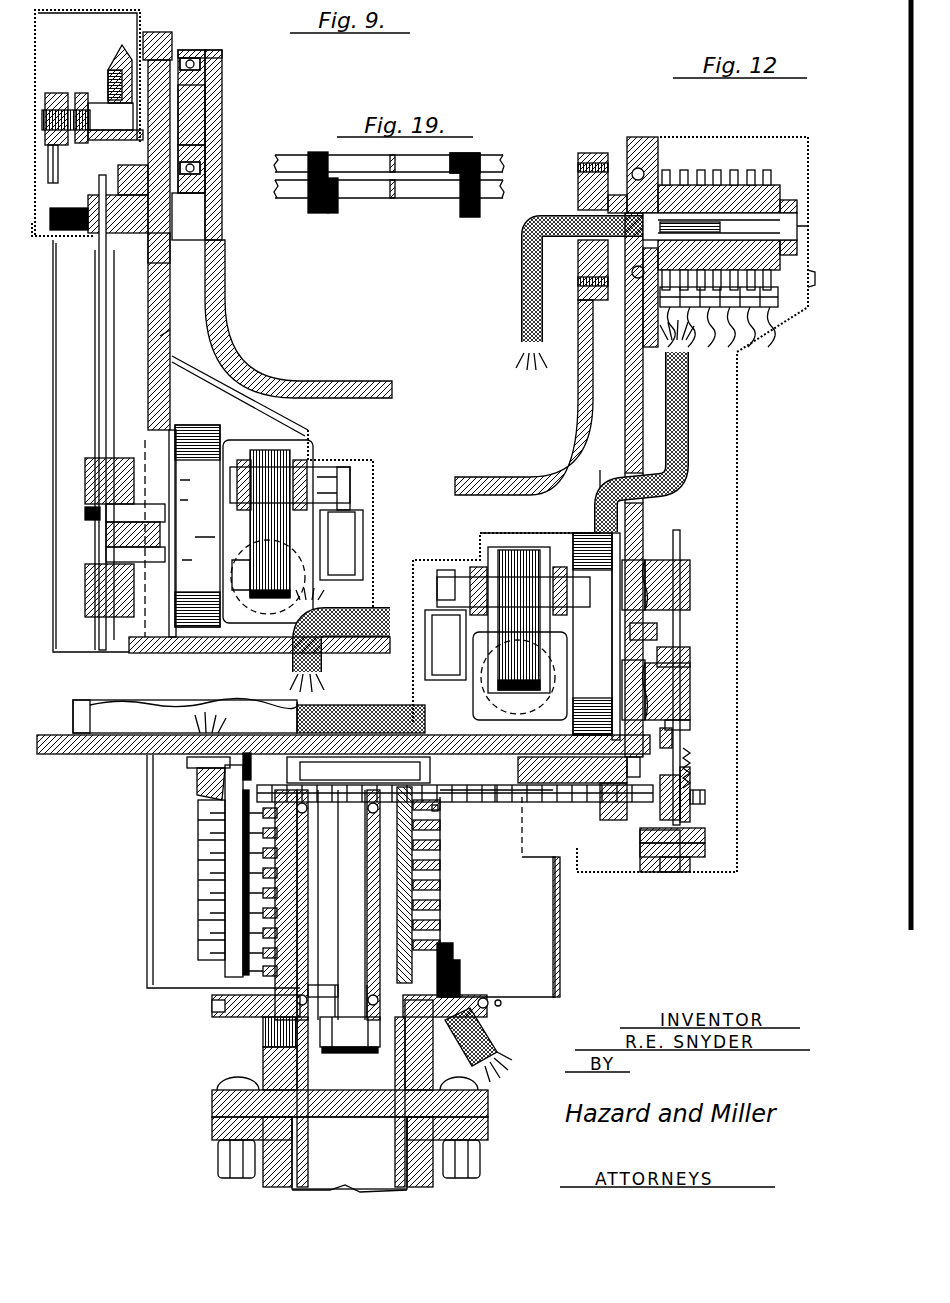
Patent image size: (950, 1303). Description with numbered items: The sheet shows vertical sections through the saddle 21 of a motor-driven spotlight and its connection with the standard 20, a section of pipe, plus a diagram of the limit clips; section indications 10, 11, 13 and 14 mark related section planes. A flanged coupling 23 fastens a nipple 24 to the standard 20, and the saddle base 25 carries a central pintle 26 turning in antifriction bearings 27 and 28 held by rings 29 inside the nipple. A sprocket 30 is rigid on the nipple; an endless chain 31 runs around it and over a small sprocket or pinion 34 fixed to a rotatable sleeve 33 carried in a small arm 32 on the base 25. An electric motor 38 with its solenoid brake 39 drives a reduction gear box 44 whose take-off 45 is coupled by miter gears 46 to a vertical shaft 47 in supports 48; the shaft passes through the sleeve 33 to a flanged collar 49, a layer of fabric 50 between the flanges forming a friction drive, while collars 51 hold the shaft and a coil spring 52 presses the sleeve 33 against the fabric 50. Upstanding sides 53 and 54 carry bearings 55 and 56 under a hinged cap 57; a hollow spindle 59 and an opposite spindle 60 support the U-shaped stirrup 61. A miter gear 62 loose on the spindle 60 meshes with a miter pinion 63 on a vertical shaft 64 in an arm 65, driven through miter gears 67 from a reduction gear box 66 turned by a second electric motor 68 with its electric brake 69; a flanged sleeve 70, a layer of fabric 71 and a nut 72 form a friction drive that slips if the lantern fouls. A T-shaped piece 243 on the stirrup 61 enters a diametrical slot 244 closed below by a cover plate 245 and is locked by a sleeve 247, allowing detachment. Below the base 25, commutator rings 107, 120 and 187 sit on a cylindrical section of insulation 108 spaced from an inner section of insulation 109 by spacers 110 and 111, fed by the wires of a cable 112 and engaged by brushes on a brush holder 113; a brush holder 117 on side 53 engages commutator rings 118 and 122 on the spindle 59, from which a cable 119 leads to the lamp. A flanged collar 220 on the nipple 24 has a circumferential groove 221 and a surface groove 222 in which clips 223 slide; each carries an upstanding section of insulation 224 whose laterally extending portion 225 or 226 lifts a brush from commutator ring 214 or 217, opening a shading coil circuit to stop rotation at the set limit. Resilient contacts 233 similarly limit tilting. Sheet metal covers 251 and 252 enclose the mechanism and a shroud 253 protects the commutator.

In FIG. 9, the housing section line 10 is at (40, 248).
In FIG. 9, the frame block 11 is at (170, 238).
In FIG. 9, the section line 13 is at (250, 787).
In FIG. 12, the section line 14 is at (746, 355).
In FIG. 9, the standard 20 is at (300, 1157).
In FIG. 9, the saddle 21 is at (152, 331).
In FIG. 12, the saddle 21 is at (614, 406).
In FIG. 9, the flanged coupling 23 is at (488, 1110).
In FIG. 9, the nipple 24 is at (395, 1098).
In FIG. 9, the base 25 is at (120, 754).
In FIG. 9, the central pintle 26 is at (445, 885).
In FIG. 9, the antifriction bearing 27 is at (360, 820).
In FIG. 9, the antifriction bearing 28 is at (365, 985).
In FIG. 9, the rings 29 is at (382, 935).
In FIG. 9, the sprocket 30 is at (440, 788).
In FIG. 9, the endless chain 31 is at (497, 787).
In FIG. 12, the small arm 32 is at (615, 820).
In FIG. 12, the rotatable sleeve 33 is at (692, 808).
In FIG. 12, the small sprocket or pinion 34 is at (690, 790).
In FIG. 12, the electric motor 38 is at (520, 565).
In FIG. 9, the solenoid brake 39 is at (340, 655).
In FIG. 12, the solenoid brake 39 is at (440, 650).
In FIG. 12, the reduction gear box 44 is at (585, 585).
In FIG. 12, the take-off 45 is at (660, 635).
In FIG. 12, the miter gears 46 is at (690, 652).
In FIG. 12, the vertical shaft 47 is at (690, 712).
In FIG. 12, the supports 48 is at (690, 690).
In FIG. 12, the flanged collar 49 is at (705, 850).
In FIG. 12, the layer of fabric 50 is at (705, 835).
In FIG. 12, the collars 51 is at (688, 730).
In FIG. 12, the coil spring 52 is at (690, 760).
In FIG. 12, the upstanding side 53 is at (622, 428).
In FIG. 9, the upstanding side 54 is at (150, 300).
In FIG. 12, the bearing 55 is at (635, 172).
In FIG. 9, the bearing 56 is at (200, 64).
In FIG. 12, the hinged cap 57 is at (643, 137).
In FIG. 12, the hollow spindle 59 is at (628, 278).
In FIG. 9, the spindle 60 is at (205, 123).
In FIG. 9, the U-shaped stirrup member 61 is at (232, 310).
In FIG. 12, the U-shaped stirrup member 61 is at (578, 370).
In FIG. 9, the miter gear 62 is at (122, 50).
In FIG. 9, the miter pinion 63 is at (128, 232).
In FIG. 9, the vertical shaft 64 is at (106, 380).
In FIG. 9, the arm 65 is at (134, 617).
In FIG. 9, the reduction gear box 66 is at (195, 457).
In FIG. 9, the miter gears 67 is at (90, 522).
In FIG. 9, the electric motor 68 is at (280, 465).
In FIG. 9, the electric brake 69 is at (345, 530).
In FIG. 9, the flanged sleeve 70 is at (100, 102).
In FIG. 9, the layer of fabric 71 is at (112, 74).
In FIG. 9, the nut 72 is at (78, 92).
In FIG. 9, the commutator ring 107 is at (245, 822).
In FIG. 9, the cylindrical section of insulation 108 is at (310, 985).
In FIG. 9, the inner section of insulation 109 is at (395, 860).
In FIG. 9, the spacer 110 is at (440, 810).
In FIG. 9, the spacer 111 is at (350, 945).
In FIG. 9, the cable 112 is at (495, 1047).
In FIG. 9, the brush holder 113 is at (232, 890).
In FIG. 12, the brush holder 117 is at (760, 300).
In FIG. 9, the commutator ring 118 is at (205, 795).
In FIG. 12, the commutator ring 118 is at (700, 185).
In FIG. 12, the cable 119 is at (522, 278).
In FIG. 9, the commutator ring 120 is at (250, 832).
In FIG. 12, the commutator ring 122 is at (680, 185).
In FIG. 9, the commutator ring 187 is at (245, 850).
In FIG. 19, the commutator ring 214 is at (425, 175).
In FIG. 19, the commutator ring 217 is at (452, 200).
In FIG. 9, the flanged collar 220 is at (265, 1017).
In FIG. 9, the circumferential groove 221 is at (215, 1006).
In FIG. 9, the surface groove 222 is at (435, 1022).
In FIG. 9, the clip 223 is at (490, 1003).
In FIG. 9, the upstanding section of insulation 224 is at (460, 975).
In FIG. 19, the upstanding section of insulation 224 is at (475, 217).
In FIG. 19, the laterally extending portion 225 is at (472, 153).
In FIG. 19, the laterally extending portion 226 is at (338, 208).
In FIG. 9, the pair of resilient contacts 233 is at (60, 208).
In FIG. 9, the T-shaped piece 243 is at (205, 100).
In FIG. 9, the diametrical slot 244 is at (222, 54).
In FIG. 9, the cover plate 245 is at (205, 160).
In FIG. 9, the sleeve 247 is at (205, 178).
In FIG. 12, the sheet metal cover 251 is at (737, 470).
In FIG. 9, the sheet metal cover 252 is at (170, 400).
In FIG. 9, the shroud 253 is at (560, 930).